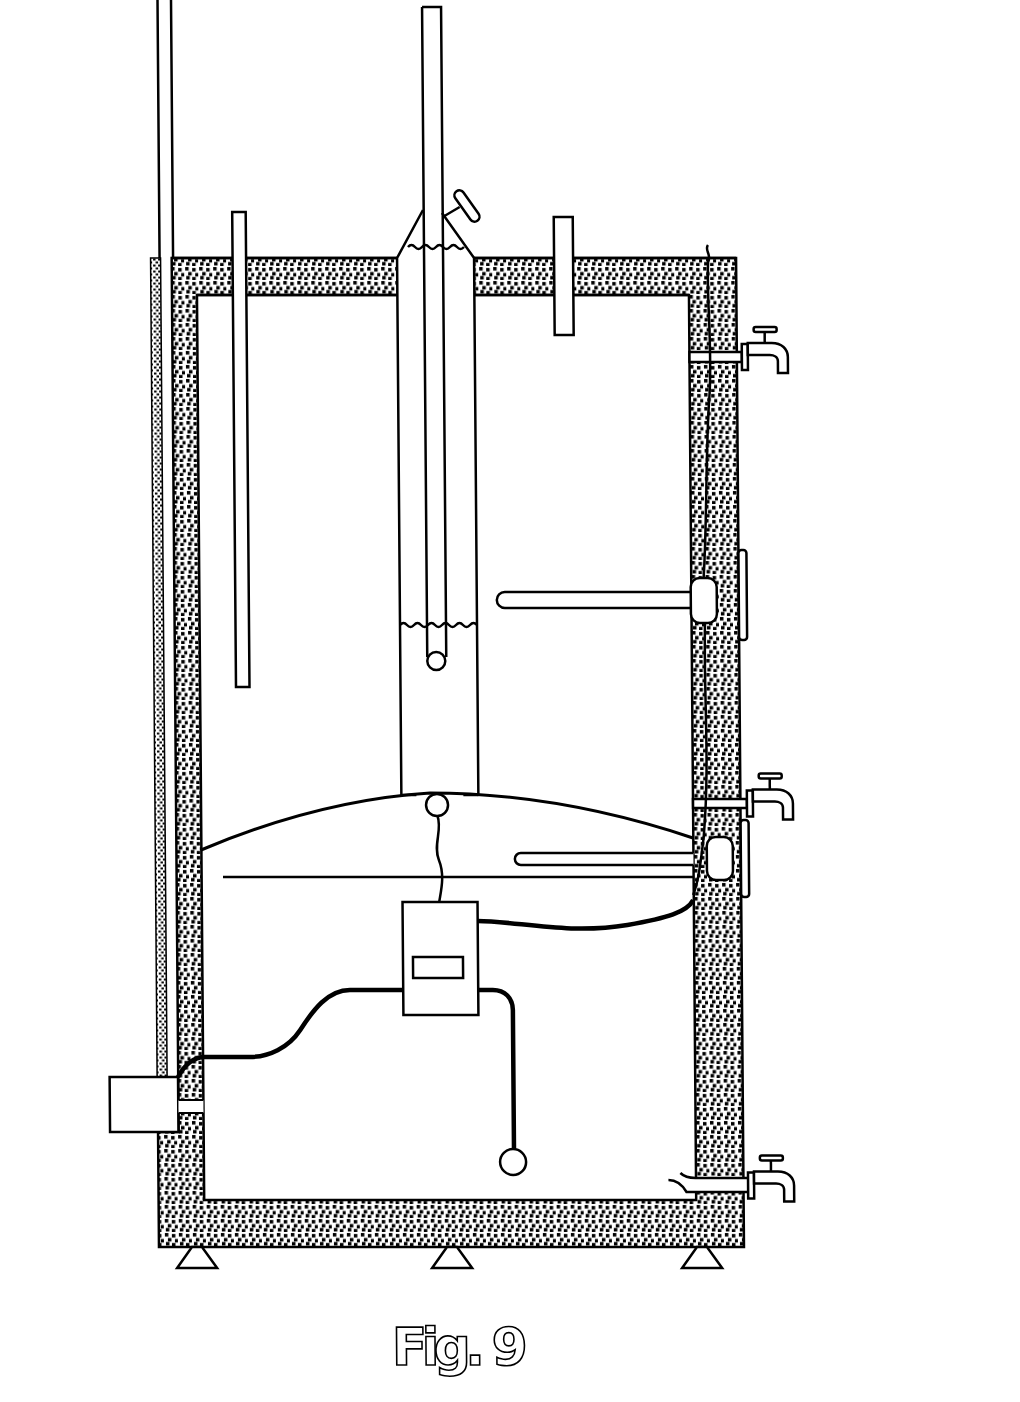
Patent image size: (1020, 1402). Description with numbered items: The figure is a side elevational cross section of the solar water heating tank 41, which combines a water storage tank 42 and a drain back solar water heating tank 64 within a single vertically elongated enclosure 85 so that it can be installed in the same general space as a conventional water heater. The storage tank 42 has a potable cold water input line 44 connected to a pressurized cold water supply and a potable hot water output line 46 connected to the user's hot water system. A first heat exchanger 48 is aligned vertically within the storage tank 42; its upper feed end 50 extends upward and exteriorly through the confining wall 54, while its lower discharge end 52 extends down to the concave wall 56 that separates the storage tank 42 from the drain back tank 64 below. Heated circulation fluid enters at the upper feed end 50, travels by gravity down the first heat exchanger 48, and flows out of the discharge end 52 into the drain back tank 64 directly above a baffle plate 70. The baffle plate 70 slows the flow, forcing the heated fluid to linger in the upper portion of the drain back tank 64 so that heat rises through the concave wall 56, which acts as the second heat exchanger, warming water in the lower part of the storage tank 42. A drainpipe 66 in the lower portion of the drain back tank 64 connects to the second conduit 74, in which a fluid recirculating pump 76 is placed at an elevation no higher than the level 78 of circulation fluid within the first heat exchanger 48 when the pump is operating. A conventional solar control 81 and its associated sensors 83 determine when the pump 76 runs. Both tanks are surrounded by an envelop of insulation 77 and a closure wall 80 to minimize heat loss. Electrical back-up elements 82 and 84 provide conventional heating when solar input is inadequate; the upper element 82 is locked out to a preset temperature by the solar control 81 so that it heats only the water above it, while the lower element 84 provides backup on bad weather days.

The solar water heating tank 41 is at (778, 238).
The water storage tank 42 is at (314, 728).
The potable cold water input line 44 is at (245, 235).
The potable hot water output line 46 is at (573, 238).
The first heat exchanger 48 is at (474, 455).
The upper feed end 50 is at (422, 118).
The lower discharge end 52 is at (452, 792).
The confining wall 54 is at (667, 252).
The concave wall 56 is at (586, 805).
The drain back solar water heating tank 64 is at (593, 1108).
The drainpipe 66 is at (193, 1108).
The baffle plate 70 is at (338, 878).
The second conduit 74 is at (157, 148).
The fluid recirculating pump 76 is at (100, 1071).
The envelop of insulation 77 is at (734, 432).
The level of circulation fluid 78 is at (410, 618).
The closure wall 80 is at (741, 520).
The solar control 81 is at (466, 947).
The water heater back-up element 82 is at (705, 598).
The sensors 83 is at (627, 937).
The back-up element 84 is at (715, 857).
The vertically elongated enclosure 85 is at (148, 517).